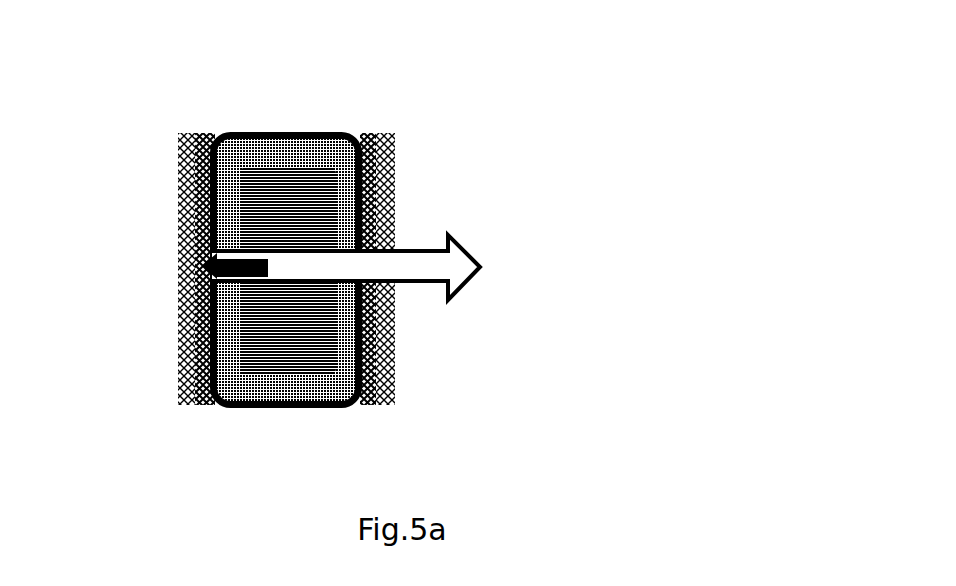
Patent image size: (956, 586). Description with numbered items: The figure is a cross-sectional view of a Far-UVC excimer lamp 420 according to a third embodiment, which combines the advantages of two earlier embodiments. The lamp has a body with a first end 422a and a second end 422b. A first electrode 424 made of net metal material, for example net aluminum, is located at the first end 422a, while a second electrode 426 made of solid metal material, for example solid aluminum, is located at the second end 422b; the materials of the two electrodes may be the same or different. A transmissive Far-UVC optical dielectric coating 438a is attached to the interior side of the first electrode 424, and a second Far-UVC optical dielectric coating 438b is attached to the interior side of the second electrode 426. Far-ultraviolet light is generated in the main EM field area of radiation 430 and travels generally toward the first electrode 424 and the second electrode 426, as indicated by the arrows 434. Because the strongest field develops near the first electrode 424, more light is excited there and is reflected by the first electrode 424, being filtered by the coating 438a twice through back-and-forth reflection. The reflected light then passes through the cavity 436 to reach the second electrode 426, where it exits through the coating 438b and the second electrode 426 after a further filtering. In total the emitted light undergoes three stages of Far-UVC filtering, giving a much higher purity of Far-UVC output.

The Far-UVC excimer lamp 420 is at (332, 253).
The first end of the body 422a is at (136, 233).
The second end of the body 422b is at (494, 224).
The first electrode 424 is at (190, 373).
The second electrode 426 is at (380, 147).
The main EM field area of radiation 430 is at (293, 190).
The arrows 434 is at (388, 263).
The cavity 436 is at (298, 131).
The Far-UVC optical dielectric coating 438a is at (207, 295).
The Far-UVC optical dielectric coating 438b is at (370, 198).